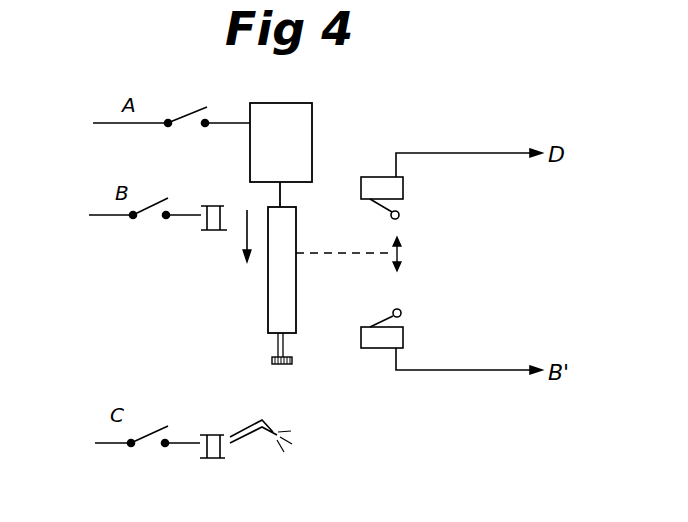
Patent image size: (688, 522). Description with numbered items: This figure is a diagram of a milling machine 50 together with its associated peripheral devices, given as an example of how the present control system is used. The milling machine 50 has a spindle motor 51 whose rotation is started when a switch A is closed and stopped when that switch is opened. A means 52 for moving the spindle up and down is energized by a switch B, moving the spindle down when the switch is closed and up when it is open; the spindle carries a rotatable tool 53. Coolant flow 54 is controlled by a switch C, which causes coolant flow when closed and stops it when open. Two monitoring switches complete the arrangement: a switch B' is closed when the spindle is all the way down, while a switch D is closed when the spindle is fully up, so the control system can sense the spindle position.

The milling machine 50 is at (326, 207).
The spindle motor 51 is at (298, 128).
The means for moving the spindle up and down 52 is at (215, 220).
The rotatable tool 53 is at (292, 359).
The coolant flow 54 is at (243, 452).